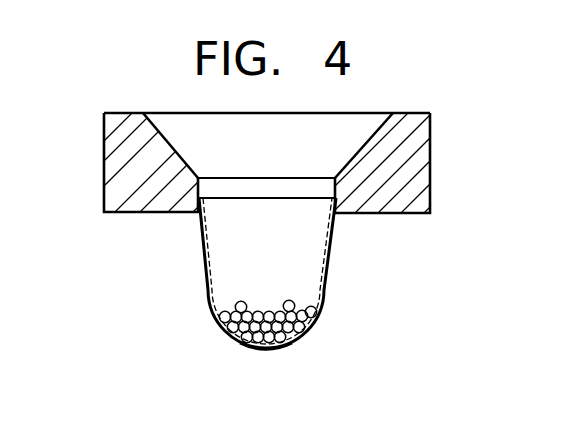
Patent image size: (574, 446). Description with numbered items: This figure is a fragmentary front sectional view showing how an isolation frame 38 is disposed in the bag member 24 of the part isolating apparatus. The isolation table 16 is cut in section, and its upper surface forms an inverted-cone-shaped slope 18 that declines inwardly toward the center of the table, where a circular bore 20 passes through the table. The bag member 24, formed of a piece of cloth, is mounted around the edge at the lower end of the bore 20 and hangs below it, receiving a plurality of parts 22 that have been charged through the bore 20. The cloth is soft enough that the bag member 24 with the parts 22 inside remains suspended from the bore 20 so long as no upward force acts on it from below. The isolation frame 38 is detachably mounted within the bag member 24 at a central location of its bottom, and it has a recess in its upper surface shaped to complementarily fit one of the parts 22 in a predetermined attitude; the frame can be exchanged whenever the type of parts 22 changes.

The isolation table 16 is at (387, 170).
The inverted-cone-shaped slope 18 is at (183, 151).
The circular bore 20 is at (325, 190).
The parts 22 is at (259, 306).
The bag member 24 is at (328, 295).
The isolation frame 38 is at (242, 344).